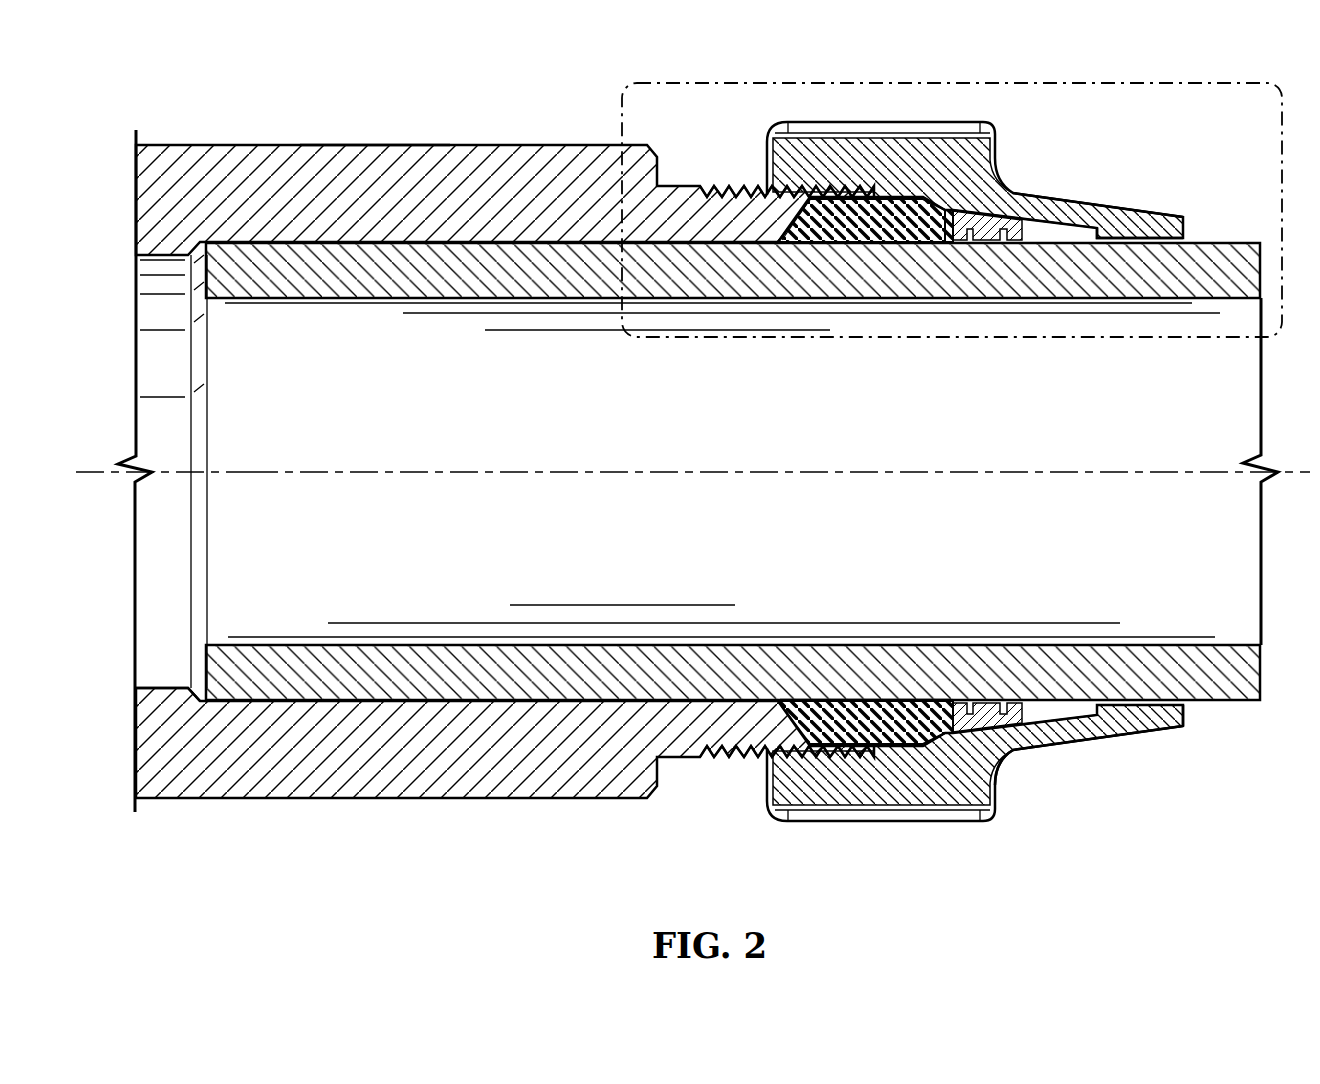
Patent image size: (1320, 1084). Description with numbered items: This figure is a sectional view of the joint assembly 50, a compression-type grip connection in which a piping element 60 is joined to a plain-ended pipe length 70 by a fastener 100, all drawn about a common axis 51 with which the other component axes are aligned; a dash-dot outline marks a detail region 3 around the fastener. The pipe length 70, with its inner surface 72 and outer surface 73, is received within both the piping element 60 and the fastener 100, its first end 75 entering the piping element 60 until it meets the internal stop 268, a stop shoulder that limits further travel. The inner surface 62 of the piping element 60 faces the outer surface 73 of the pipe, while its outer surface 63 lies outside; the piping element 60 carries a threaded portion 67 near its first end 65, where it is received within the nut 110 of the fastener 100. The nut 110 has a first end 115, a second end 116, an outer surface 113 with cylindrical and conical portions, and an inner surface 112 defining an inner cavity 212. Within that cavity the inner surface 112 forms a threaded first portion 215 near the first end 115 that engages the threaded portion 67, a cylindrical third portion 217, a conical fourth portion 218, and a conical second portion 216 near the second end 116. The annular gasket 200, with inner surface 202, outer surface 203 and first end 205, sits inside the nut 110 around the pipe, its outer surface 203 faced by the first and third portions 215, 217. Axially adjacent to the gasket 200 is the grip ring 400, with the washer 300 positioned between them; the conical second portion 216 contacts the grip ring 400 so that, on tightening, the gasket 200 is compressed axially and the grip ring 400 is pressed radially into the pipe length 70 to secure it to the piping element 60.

The joint assembly 50 is at (280, 76).
The detail region of FIG. 3 is at (620, 88).
The piping element 60 is at (410, 797).
The outer surface 63 is at (366, 143).
The inner surface 62 is at (158, 262).
The internal stop 268 is at (197, 400).
The first end 75 is at (200, 663).
The outer surface 73 is at (1238, 243).
The pipe length 70 is at (1233, 700).
The inner surface 72 is at (1200, 618).
The threaded portion 67 is at (738, 186).
The first end 115 is at (765, 790).
The outer surface 203 is at (873, 195).
The nut 110 is at (893, 130).
The fastener 100 is at (885, 810).
The outer surface 113 is at (1045, 193).
The inner surface 112 is at (1075, 745).
The inner cavity 212 is at (1075, 232).
The second end 116 is at (1185, 705).
The washer 300 is at (1010, 757).
The third portion 217 is at (887, 203).
The gasket 200 is at (885, 700).
The fourth portion 218 is at (948, 244).
The inner surface 202 is at (855, 245).
The first portion 215 is at (833, 244).
The first end 205 is at (778, 222).
The first end 65 is at (812, 700).
The second portion 216 is at (1042, 240).
The grip ring 400 is at (1058, 708).
The axis 51 is at (345, 476).